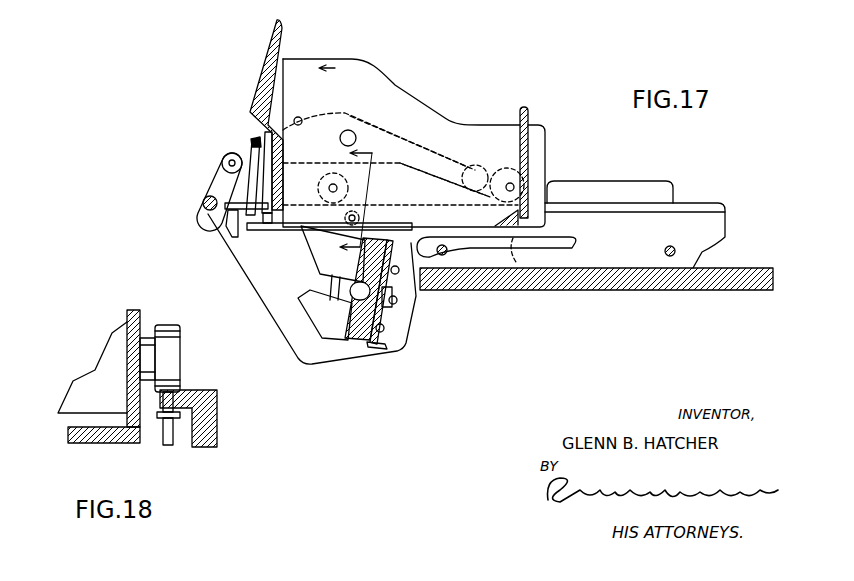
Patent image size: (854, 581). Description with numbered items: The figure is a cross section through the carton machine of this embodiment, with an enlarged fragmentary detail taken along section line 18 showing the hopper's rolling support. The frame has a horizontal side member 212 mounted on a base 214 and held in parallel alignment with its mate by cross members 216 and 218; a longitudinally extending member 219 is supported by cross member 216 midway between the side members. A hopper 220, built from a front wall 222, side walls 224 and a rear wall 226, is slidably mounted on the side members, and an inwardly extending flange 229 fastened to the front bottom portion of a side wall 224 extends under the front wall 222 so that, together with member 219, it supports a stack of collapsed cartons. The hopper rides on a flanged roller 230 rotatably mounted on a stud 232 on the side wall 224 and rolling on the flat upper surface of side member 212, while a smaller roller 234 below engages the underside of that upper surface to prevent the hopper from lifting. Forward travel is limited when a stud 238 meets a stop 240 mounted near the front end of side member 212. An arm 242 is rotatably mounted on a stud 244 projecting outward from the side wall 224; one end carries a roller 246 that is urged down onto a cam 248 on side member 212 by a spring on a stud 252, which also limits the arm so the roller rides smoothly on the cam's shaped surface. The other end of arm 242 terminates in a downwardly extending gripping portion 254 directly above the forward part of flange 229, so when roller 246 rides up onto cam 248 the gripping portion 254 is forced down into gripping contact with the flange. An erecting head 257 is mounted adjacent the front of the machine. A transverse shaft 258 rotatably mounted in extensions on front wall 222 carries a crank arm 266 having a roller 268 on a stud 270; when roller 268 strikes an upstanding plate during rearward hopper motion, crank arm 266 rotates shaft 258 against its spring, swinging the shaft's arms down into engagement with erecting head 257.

In FIG. 17, the section line 18— 18 is at (360, 205).
In FIG. 17, the side member 212 is at (692, 224).
In FIG. 18, the side member 212 is at (217, 432).
In FIG. 17, the base 214 is at (734, 287).
In FIG. 17, the cross member 216 is at (443, 256).
In FIG. 17, the cross member 218 is at (676, 250).
In FIG. 17, the longitudinally extending member 219 is at (577, 240).
In FIG. 17, the hopper 220 is at (381, 77).
In FIG. 17, the front wall 222 is at (272, 44).
In FIG. 18, the front wall 222 is at (98, 366).
In FIG. 17, the side wall 224 is at (423, 113).
In FIG. 18, the side wall 224 is at (127, 322).
In FIG. 17, the rear wall 226 is at (530, 112).
In FIG. 17, the flange 229 is at (262, 233).
In FIG. 18, the flange 229 is at (77, 444).
In FIG. 17, the flanged roller 230 is at (494, 205).
In FIG. 18, the flanged roller 230 is at (179, 352).
In FIG. 18, the stud 232 is at (147, 337).
In FIG. 17, the roller 234 is at (533, 253).
In FIG. 17, the stud 238 is at (360, 217).
In FIG. 18, the stud 238 is at (180, 419).
In FIG. 17, the stop 240 is at (228, 225).
In FIG. 18, the stop 240 is at (168, 445).
In FIG. 17, the arm 242 is at (430, 152).
In FIG. 17, the stud 244 is at (353, 133).
In FIG. 17, the roller 246 is at (476, 166).
In FIG. 17, the cam 248 is at (634, 180).
In FIG. 17, the stud 252 is at (300, 118).
In FIG. 17, the gripping portion 254 is at (280, 202).
In FIG. 17, the erecting head 257 is at (333, 325).
In FIG. 17, the transverse shaft 258 is at (203, 208).
In FIG. 17, the crank arm 266 is at (212, 186).
In FIG. 17, the roller 268 is at (226, 155).
In FIG. 17, the stud 270 is at (228, 162).